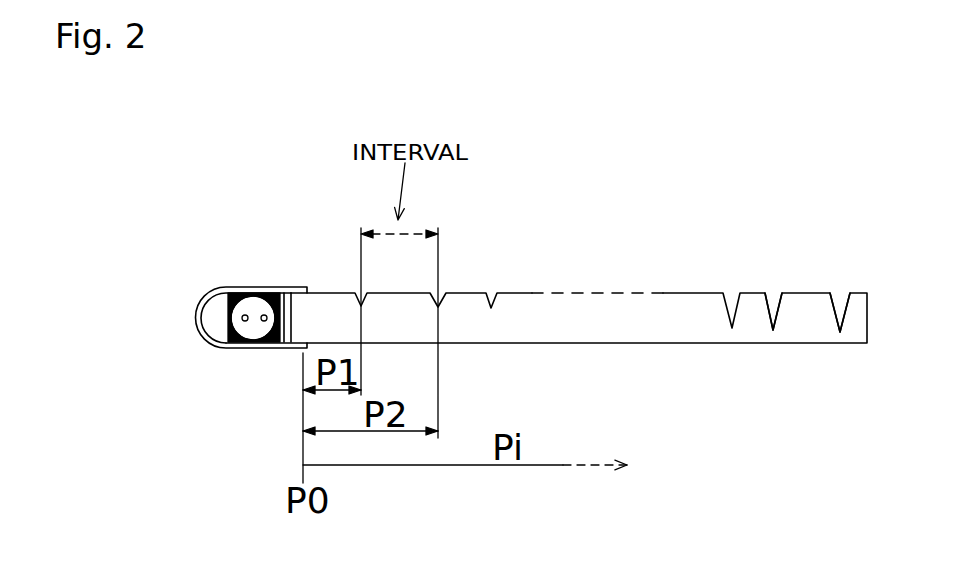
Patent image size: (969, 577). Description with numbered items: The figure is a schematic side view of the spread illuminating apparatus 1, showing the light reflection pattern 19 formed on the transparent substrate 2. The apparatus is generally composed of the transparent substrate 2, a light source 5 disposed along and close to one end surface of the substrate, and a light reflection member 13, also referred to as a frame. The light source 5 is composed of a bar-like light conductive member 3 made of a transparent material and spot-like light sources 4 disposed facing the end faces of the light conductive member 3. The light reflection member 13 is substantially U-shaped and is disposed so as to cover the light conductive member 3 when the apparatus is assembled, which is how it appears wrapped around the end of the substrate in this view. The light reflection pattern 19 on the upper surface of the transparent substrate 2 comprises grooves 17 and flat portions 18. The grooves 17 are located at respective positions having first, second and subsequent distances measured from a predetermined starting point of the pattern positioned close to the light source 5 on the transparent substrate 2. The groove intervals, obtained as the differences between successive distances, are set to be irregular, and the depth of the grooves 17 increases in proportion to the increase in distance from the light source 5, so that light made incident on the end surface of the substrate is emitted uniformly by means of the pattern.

The spread illuminating apparatus 1 is at (571, 170).
The transparent substrate 2 is at (618, 322).
The light conductive member 3 is at (235, 293).
The spot-like light sources 4 is at (257, 307).
The light source 5 is at (288, 189).
The light reflection member 13 is at (194, 313).
The grooves 17 is at (773, 297).
The flat portions 18 is at (807, 297).
The light reflection pattern 19 is at (848, 157).